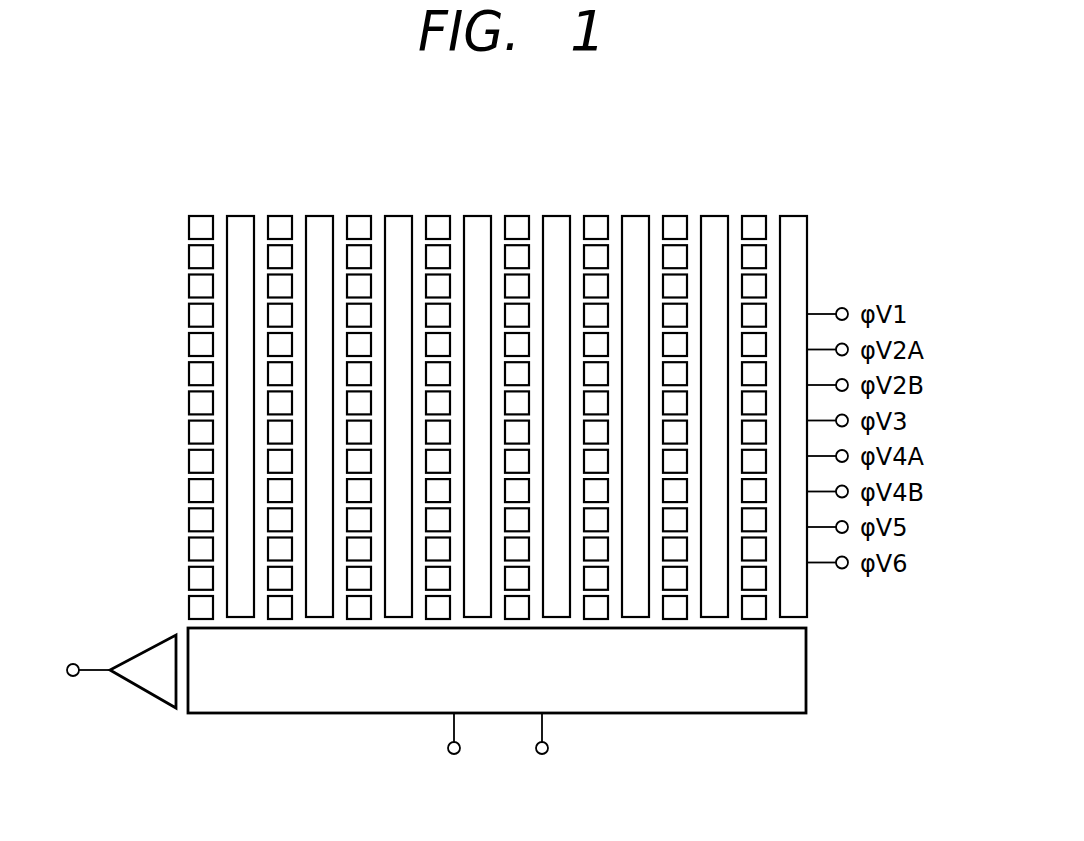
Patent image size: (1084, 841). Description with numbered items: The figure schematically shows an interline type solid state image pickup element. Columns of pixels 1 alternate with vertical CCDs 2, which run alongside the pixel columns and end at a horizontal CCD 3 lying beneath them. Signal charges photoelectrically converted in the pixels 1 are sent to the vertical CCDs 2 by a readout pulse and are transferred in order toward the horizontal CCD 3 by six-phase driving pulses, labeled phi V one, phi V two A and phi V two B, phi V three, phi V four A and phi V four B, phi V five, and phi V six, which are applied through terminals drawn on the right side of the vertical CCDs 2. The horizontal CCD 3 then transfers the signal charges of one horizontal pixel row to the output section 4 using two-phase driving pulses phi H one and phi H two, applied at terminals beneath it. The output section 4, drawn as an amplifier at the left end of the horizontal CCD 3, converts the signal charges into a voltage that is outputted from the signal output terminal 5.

The pixels 1 is at (201, 229).
The vertical CCDs 2 is at (793, 231).
The horizontal CCD 3 is at (806, 662).
The output section 4 is at (142, 648).
The signal output terminal 5 is at (75, 663).